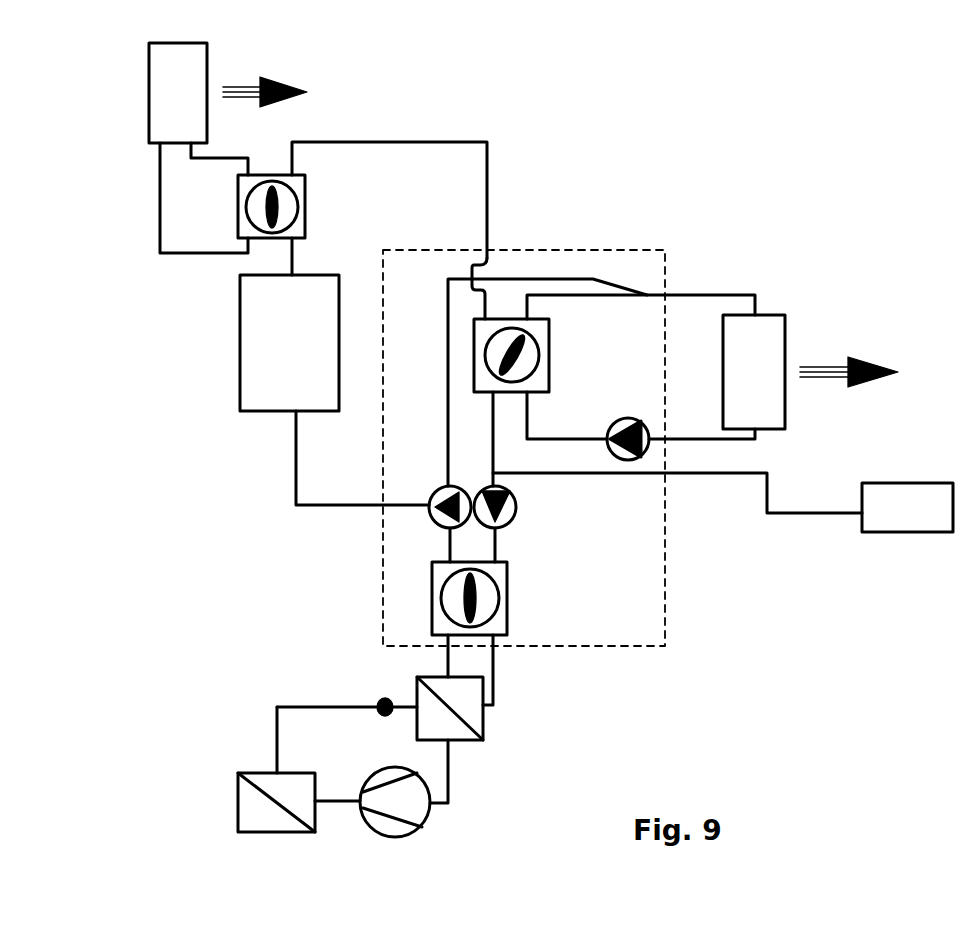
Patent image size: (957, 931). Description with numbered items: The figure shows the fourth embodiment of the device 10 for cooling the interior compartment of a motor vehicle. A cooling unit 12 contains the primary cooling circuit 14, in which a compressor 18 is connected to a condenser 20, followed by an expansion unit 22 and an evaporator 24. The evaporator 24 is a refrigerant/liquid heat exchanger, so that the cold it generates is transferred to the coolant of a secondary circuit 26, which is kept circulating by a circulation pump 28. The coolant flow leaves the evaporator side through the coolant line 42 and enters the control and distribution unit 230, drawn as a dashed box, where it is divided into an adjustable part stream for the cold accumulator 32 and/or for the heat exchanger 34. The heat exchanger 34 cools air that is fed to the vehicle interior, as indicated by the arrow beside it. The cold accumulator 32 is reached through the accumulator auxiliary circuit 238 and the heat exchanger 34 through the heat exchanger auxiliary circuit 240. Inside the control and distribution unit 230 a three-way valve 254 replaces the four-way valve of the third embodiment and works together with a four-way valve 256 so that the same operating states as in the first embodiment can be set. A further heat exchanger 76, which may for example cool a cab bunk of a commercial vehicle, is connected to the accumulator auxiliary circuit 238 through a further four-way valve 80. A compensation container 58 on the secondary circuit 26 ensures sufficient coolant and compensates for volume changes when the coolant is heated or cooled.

The device 10 is at (277, 547).
The cooling unit 12 is at (460, 783).
The primary cooling circuit 14 is at (317, 705).
The compressor 18 is at (417, 815).
The condenser 20 is at (253, 810).
The expansion unit 22 is at (377, 700).
The evaporator 24 is at (470, 710).
The secondary circuit 26 is at (678, 197).
The circulation pump 28 is at (517, 522).
The cold accumulator 32 is at (265, 322).
The heat exchanger 34 is at (763, 340).
The coolant line 42 is at (447, 657).
The compensation container 58 is at (887, 510).
The further heat exchanger 76 is at (168, 102).
The four-way valve 80 is at (268, 175).
The control and distribution unit 230 is at (533, 248).
The accumulator auxiliary circuit 238 is at (330, 142).
The heat exchanger auxiliary circuit 240 is at (698, 293).
The three-way valve 254 is at (430, 503).
The four-way valve 256 is at (549, 373).